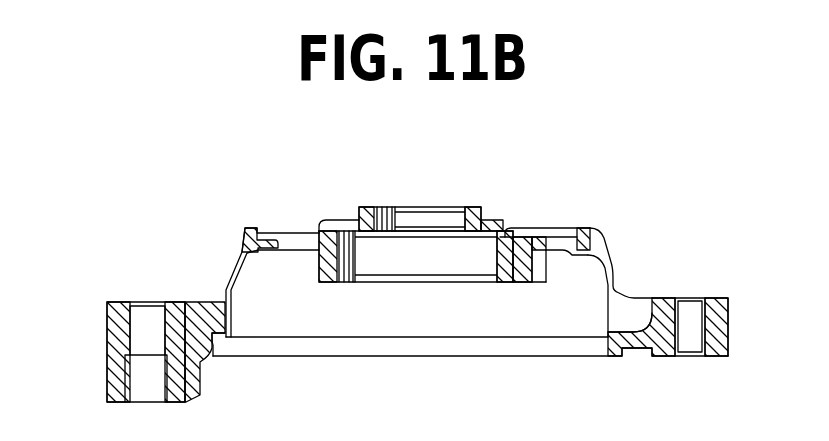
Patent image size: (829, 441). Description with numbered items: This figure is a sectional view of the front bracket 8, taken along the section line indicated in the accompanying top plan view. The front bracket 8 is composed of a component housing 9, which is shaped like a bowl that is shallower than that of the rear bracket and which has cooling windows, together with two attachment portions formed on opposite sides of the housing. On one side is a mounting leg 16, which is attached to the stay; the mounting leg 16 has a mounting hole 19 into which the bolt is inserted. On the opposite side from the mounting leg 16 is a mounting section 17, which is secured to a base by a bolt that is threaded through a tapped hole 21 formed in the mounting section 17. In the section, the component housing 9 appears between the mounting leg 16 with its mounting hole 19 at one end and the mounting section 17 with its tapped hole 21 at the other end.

The front bracket 8 is at (533, 222).
The component housing 9 is at (420, 315).
The mounting leg 16 is at (172, 305).
The mounting section 17 is at (655, 290).
The mounting hole 19 is at (138, 315).
The tapped hole 21 is at (692, 312).